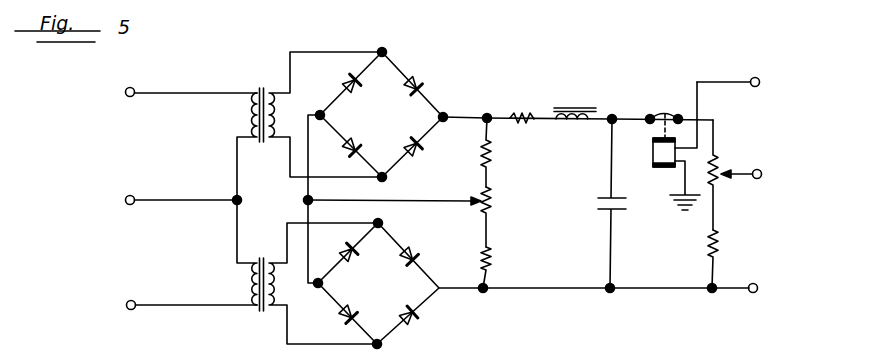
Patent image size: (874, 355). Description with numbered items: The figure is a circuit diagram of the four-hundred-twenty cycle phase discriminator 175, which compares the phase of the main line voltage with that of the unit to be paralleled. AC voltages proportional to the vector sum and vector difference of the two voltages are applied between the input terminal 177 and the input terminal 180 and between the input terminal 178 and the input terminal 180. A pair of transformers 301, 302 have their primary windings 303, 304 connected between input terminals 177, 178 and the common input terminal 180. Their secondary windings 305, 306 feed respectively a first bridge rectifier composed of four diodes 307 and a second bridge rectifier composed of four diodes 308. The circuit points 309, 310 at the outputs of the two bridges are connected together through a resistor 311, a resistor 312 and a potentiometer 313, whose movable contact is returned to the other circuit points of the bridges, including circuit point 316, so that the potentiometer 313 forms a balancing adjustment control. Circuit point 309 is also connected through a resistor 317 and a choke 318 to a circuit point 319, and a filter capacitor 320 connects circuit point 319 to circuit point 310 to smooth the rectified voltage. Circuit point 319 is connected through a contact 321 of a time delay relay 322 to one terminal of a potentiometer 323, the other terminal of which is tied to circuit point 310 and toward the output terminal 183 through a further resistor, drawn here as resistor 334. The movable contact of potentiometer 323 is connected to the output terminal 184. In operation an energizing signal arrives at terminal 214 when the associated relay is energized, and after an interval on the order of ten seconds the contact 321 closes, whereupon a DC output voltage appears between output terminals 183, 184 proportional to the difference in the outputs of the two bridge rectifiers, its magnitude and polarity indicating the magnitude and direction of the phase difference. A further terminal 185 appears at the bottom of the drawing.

The phase discriminator 175 is at (683, 61).
The input terminal 177 is at (128, 95).
The input terminal 178 is at (128, 302).
The input terminal 180 is at (127, 204).
The output terminal 183 is at (754, 293).
The output terminal 184 is at (759, 178).
The output terminal 185 is at (503, 351).
The terminal 214 is at (757, 86).
The transformer 301 is at (261, 90).
The transformer 302 is at (256, 311).
The primary winding 303 is at (243, 102).
The primary winding 304 is at (243, 283).
The secondary winding 305 is at (280, 101).
The secondary winding 306 is at (283, 297).
The diodes 307 is at (404, 141).
The diodes 308 is at (410, 306).
The circuit point 309 is at (445, 114).
The circuit point 310 is at (442, 292).
The resistor 311 is at (492, 160).
The resistor 312 is at (488, 262).
The potentiometer 313 is at (492, 193).
The circuit point 316 is at (323, 286).
The resistor 317 is at (519, 116).
The choke 318 is at (573, 107).
The circuit point 319 is at (324, 116).
The filter capacitor 320 is at (604, 212).
The contact 321 is at (673, 114).
The time delay relay 322 is at (652, 157).
The potentiometer 323 is at (721, 158).
The resistor 334 is at (717, 246).